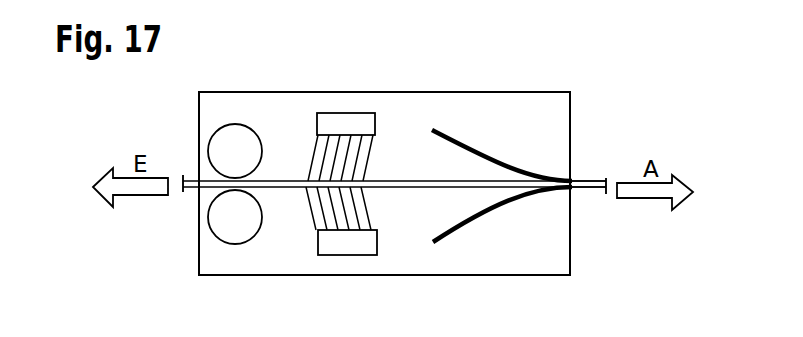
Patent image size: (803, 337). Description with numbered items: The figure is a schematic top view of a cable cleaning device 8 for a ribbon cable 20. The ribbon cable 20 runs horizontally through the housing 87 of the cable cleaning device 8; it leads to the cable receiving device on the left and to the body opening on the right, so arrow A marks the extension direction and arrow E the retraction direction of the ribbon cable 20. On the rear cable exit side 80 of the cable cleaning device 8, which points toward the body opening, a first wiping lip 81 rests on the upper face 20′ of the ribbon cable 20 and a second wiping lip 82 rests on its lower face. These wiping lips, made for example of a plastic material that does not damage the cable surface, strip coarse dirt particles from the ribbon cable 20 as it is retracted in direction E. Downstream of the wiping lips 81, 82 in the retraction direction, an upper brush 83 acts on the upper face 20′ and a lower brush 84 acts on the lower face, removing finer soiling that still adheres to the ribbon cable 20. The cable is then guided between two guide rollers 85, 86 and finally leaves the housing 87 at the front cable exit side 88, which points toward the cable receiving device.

The cable cleaning device 8 is at (400, 74).
The housing 87 is at (463, 92).
The guide roller 85 is at (234, 145).
The guide roller 86 is at (244, 224).
The upper brush 83 is at (337, 122).
The lower brush 84 is at (350, 245).
The ribbon cable 20 is at (418, 200).
The front cable exit side 88 is at (187, 163).
The rear cable exit side 80 is at (582, 166).
The first wiping lip 81 is at (467, 150).
The second wiping lip 82 is at (490, 210).
The upper face 20′ is at (597, 172).